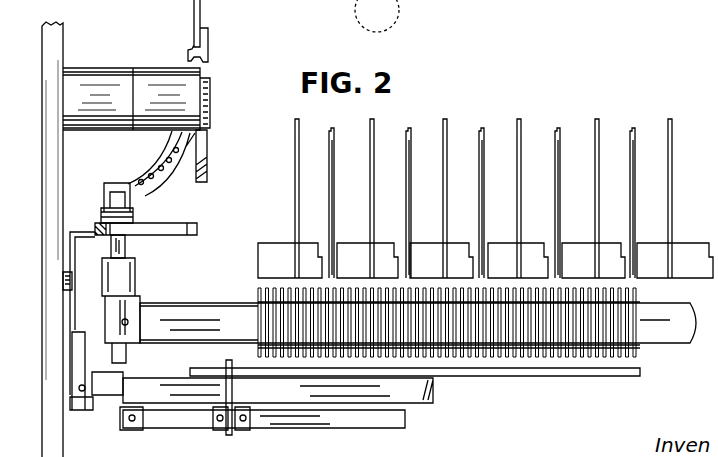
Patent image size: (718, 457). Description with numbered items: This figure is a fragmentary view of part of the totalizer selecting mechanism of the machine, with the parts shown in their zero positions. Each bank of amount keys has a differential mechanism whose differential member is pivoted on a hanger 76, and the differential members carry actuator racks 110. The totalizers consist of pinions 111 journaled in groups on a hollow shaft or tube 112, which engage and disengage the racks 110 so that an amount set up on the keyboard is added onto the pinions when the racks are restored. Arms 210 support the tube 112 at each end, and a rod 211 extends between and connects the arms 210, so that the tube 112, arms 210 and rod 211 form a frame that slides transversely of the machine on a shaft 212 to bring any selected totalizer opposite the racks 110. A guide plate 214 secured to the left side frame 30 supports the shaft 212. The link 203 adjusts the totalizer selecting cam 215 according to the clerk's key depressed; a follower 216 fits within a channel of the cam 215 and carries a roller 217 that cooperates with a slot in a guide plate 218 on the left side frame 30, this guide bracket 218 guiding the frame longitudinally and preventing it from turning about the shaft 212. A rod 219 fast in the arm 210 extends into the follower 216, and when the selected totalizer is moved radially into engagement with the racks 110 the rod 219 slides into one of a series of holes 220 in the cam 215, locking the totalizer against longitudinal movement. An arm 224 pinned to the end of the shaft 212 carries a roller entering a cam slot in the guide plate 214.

The left side frame 30 is at (42, 231).
The link 203 is at (204, 11).
The totalizer selecting cam 215 is at (165, 172).
The holes 220 is at (153, 170).
The follower 216 is at (104, 202).
The roller 217 is at (133, 214).
The guide plate 218 is at (180, 235).
The rod 219 is at (125, 245).
The arms 210 is at (138, 300).
The arm 224 is at (85, 346).
The guide plate 214 is at (63, 349).
The hollow shaft 112 is at (193, 305).
The totalizer pinions 111 is at (612, 357).
The hanger 76 is at (298, 125).
The actuator racks 110 is at (327, 265).
The shaft 212 is at (419, 403).
The rod 211 is at (270, 428).